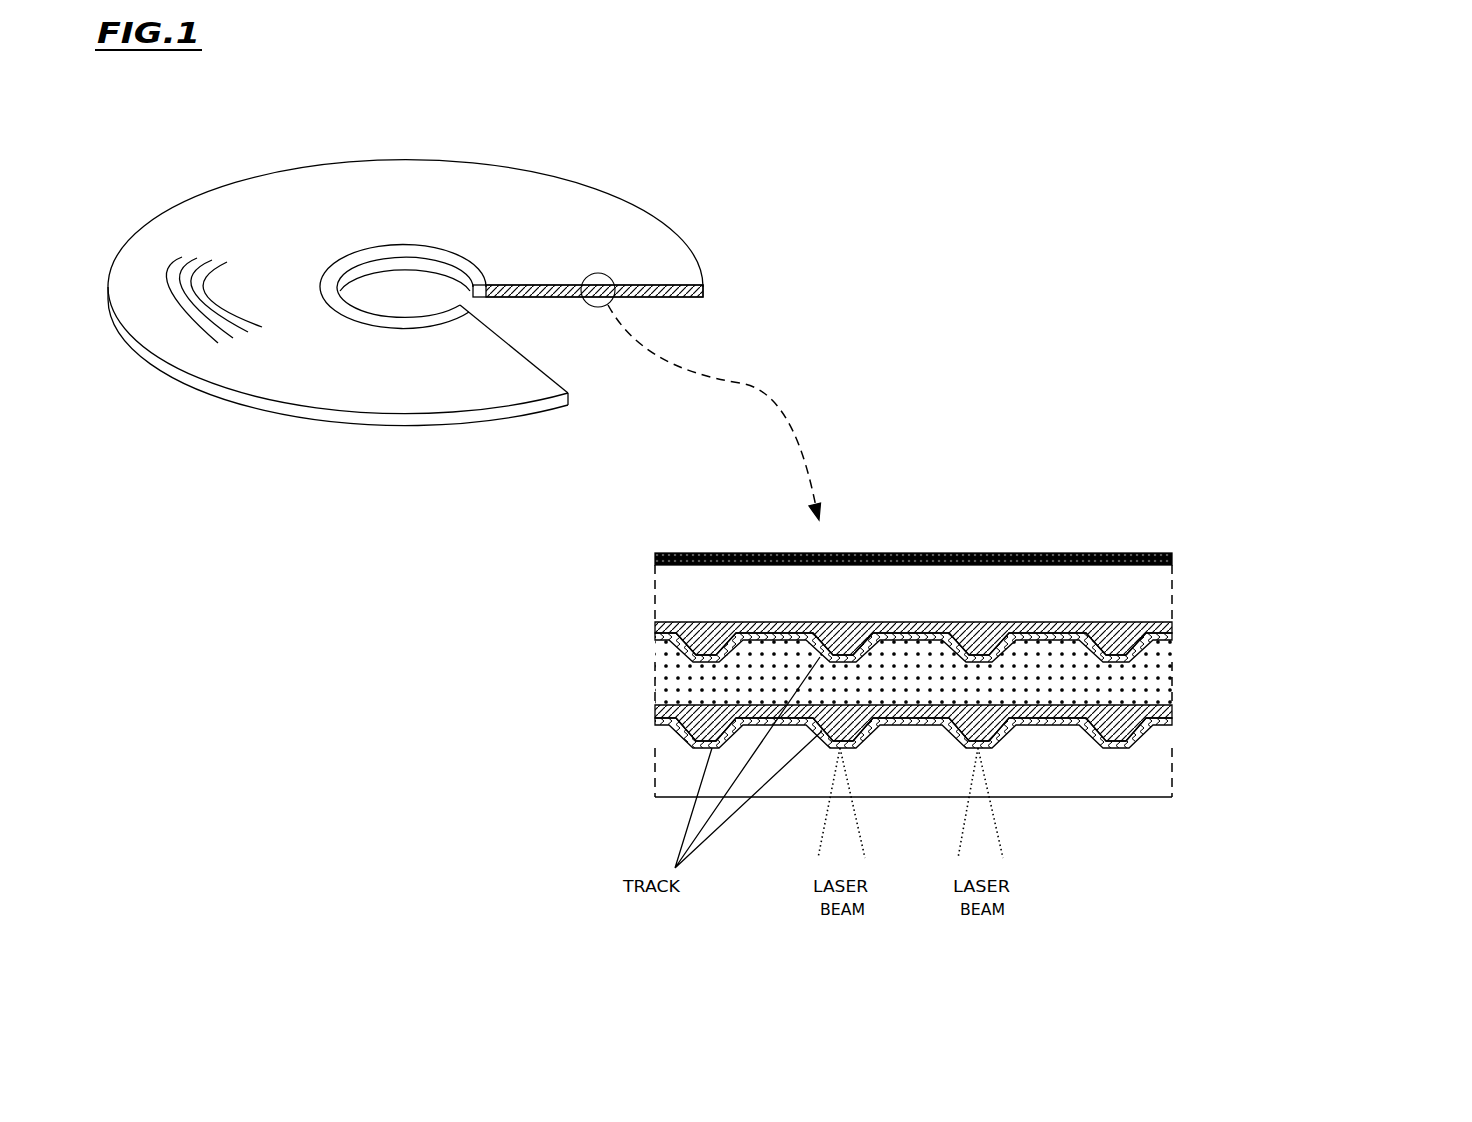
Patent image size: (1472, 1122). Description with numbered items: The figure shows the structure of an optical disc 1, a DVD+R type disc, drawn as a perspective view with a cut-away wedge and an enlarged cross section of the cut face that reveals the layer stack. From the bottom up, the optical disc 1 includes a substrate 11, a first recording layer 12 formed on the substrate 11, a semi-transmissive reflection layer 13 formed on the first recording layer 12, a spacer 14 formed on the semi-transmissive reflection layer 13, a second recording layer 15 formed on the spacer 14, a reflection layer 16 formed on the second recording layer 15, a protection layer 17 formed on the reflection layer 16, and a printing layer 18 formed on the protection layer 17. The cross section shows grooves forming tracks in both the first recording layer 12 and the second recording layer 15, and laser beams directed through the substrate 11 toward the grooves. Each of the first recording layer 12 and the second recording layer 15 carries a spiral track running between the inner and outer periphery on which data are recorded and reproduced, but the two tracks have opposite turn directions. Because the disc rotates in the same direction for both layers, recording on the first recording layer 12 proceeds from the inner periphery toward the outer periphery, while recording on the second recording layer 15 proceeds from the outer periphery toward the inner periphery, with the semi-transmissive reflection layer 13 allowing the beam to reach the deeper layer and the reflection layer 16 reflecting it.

The optical disc 1 is at (603, 230).
The substrate 11 is at (1030, 782).
The first recording layer 12 is at (1122, 747).
The semi-transmissive reflection layer 13 is at (1133, 700).
The spacer 14 is at (901, 655).
The second recording layer 15 is at (695, 655).
The reflection layer 16 is at (697, 637).
The protection layer 17 is at (1117, 590).
The printing layer 18 is at (870, 553).